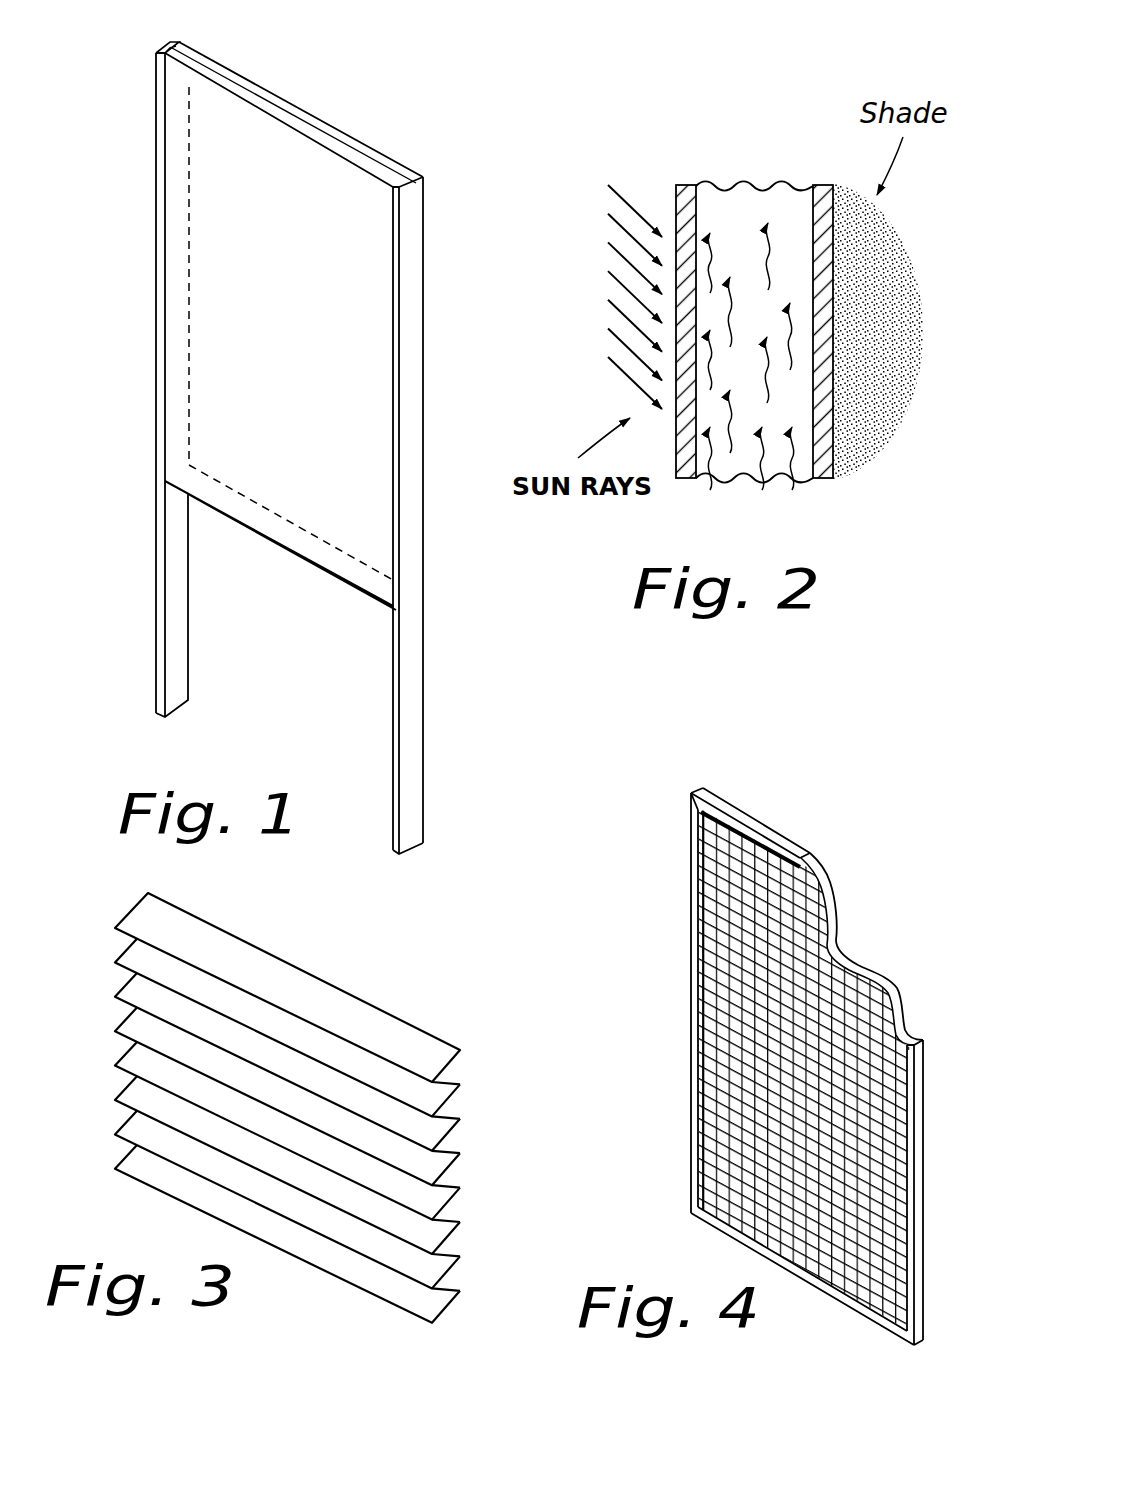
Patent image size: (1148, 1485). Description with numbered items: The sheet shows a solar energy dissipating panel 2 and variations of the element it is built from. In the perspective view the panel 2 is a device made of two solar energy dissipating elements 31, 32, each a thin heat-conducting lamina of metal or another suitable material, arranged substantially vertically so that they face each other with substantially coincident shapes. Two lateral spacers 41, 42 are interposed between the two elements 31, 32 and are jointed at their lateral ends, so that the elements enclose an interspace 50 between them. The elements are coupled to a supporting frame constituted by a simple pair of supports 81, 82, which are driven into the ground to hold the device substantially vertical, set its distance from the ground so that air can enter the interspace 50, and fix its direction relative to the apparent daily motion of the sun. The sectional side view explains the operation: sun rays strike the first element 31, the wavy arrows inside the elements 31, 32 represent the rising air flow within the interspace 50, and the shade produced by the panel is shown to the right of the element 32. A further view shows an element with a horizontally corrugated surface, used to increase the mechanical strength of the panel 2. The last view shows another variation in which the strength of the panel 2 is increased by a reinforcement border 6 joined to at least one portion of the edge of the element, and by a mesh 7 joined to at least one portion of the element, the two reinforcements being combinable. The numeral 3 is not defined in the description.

In FIG. 1, the solar energy dissipating panel 2 is at (319, 439).
In FIG. 4, the solar energy dissipating panel 2 is at (770, 1066).
In FIG. 4, the top frame member with torn-away section 3 is at (824, 868).
In FIG. 4, the reinforcement border 6 is at (691, 1057).
In FIG. 4, the mesh 7 is at (742, 923).
In FIG. 1, the solar energy dissipating element 31 is at (196, 78).
In FIG. 2, the solar energy dissipating element 31 is at (682, 202).
In FIG. 1, the solar energy dissipating element 32 is at (323, 125).
In FIG. 2, the solar energy dissipating element 32 is at (820, 186).
In FIG. 1, the lateral spacer 41 is at (178, 55).
In FIG. 1, the lateral spacer 42 is at (392, 170).
In FIG. 1, the interspace 50 is at (274, 104).
In FIG. 2, the interspace 50 is at (694, 203).
In FIG. 1, the support 81 is at (157, 610).
In FIG. 1, the support 82 is at (402, 707).